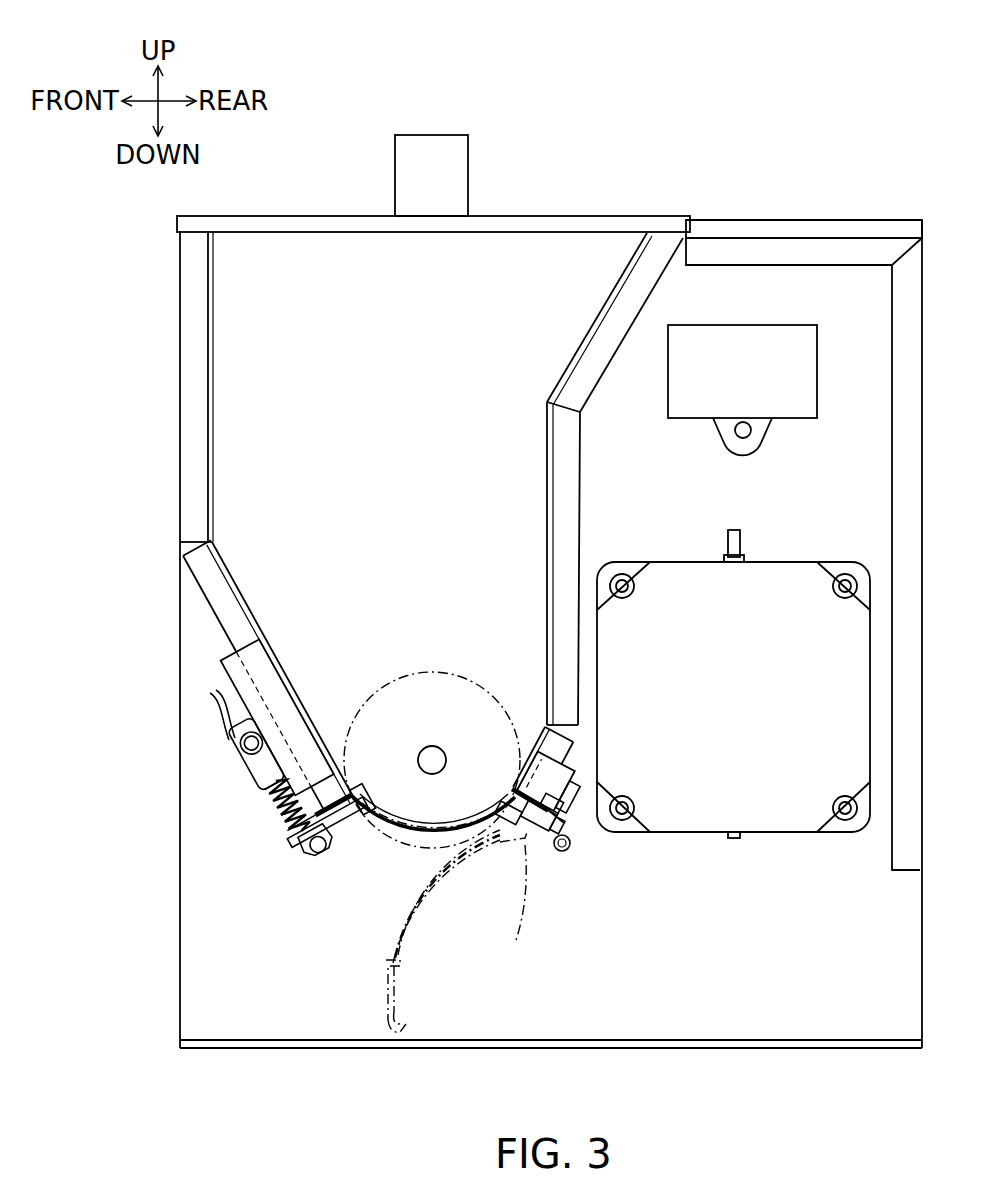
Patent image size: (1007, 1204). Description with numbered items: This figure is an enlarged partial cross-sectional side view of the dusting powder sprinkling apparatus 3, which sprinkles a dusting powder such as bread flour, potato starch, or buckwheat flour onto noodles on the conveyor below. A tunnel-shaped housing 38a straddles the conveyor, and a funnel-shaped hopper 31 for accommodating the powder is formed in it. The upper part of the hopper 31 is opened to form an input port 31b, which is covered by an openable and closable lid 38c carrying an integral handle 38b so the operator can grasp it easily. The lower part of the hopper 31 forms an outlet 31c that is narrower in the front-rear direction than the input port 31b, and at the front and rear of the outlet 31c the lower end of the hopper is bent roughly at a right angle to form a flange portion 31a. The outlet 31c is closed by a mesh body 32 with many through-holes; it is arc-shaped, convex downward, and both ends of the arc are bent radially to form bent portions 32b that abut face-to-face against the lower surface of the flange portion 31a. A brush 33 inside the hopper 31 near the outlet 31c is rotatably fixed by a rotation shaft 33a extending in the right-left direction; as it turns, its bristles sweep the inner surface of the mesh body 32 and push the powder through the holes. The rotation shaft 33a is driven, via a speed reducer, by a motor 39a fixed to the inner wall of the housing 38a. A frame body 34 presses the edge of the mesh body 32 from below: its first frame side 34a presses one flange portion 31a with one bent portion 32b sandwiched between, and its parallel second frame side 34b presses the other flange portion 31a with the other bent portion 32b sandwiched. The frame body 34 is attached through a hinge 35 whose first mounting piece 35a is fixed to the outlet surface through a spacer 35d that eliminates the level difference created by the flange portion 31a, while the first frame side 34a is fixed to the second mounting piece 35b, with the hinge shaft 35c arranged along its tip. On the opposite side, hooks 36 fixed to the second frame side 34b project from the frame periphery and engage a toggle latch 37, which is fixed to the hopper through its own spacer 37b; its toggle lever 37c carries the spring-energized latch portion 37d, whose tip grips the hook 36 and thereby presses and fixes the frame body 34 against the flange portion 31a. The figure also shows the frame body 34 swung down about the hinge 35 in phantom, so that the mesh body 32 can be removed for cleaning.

The dusting powder sprinkling apparatus 3 is at (683, 136).
The hopper 31 is at (546, 440).
The flange portion 31a is at (340, 790).
The input port 31b is at (214, 232).
The outlet 31c is at (520, 770).
The mesh body 32 is at (386, 828).
The bent portion 32b is at (353, 793).
The brush 33 is at (419, 672).
The rotation shaft 33a is at (440, 747).
The frame body 34 is at (435, 842).
The first frame side 34a is at (523, 911).
The second frame side 34b is at (378, 1005).
The hinge 35 is at (610, 840).
The first mounting piece 35a is at (590, 832).
The second mounting piece 35b is at (547, 850).
The hinge shaft 35c is at (570, 852).
The spacer 35d is at (577, 772).
The hook 36 is at (320, 856).
The toggle latch 37 is at (240, 804).
The spacer 37b is at (230, 657).
The toggle lever 37c is at (227, 750).
The latch portion 37d is at (302, 843).
The housing 38a is at (815, 220).
The handle 38b is at (433, 135).
The lid 38c is at (545, 216).
The motor 39a is at (790, 835).